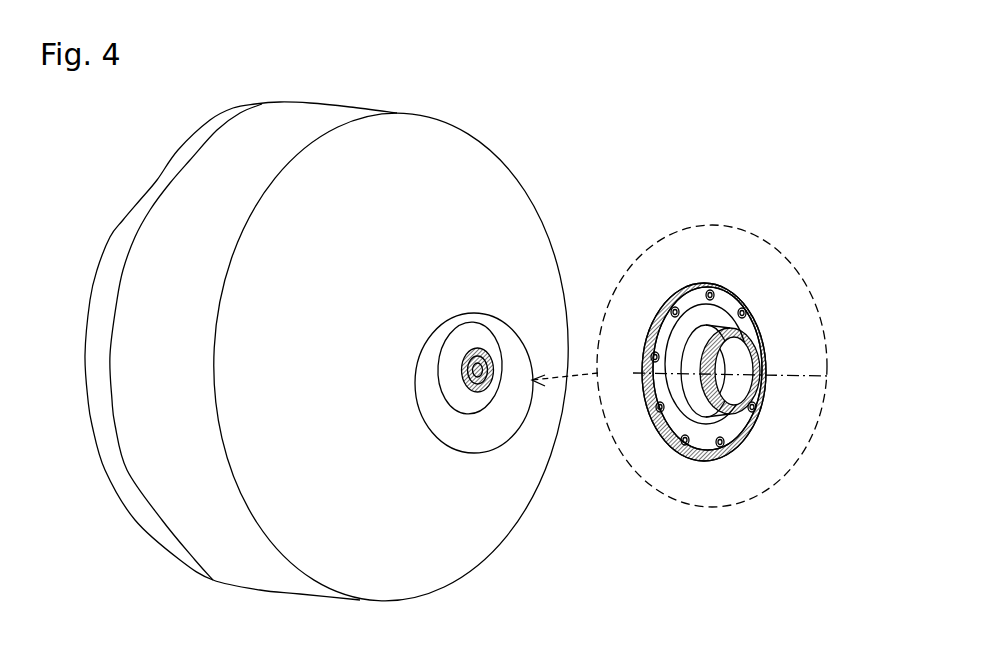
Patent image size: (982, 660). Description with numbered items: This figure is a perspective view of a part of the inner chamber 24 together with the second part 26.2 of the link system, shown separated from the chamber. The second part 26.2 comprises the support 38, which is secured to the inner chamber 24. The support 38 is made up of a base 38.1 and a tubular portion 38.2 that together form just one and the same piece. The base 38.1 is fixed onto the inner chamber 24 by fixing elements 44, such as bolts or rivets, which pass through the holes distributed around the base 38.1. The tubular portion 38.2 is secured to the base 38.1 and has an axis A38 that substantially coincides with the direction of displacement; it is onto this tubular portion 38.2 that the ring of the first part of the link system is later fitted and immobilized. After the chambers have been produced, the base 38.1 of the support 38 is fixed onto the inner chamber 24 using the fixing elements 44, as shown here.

The inner chamber 24 is at (453, 356).
The second part 26.2 is at (717, 309).
The support 38 is at (477, 397).
The base 38.1 is at (658, 431).
The tubular portion 38.2 is at (737, 427).
The fixing elements 44 is at (655, 352).
The axis A38 is at (735, 375).